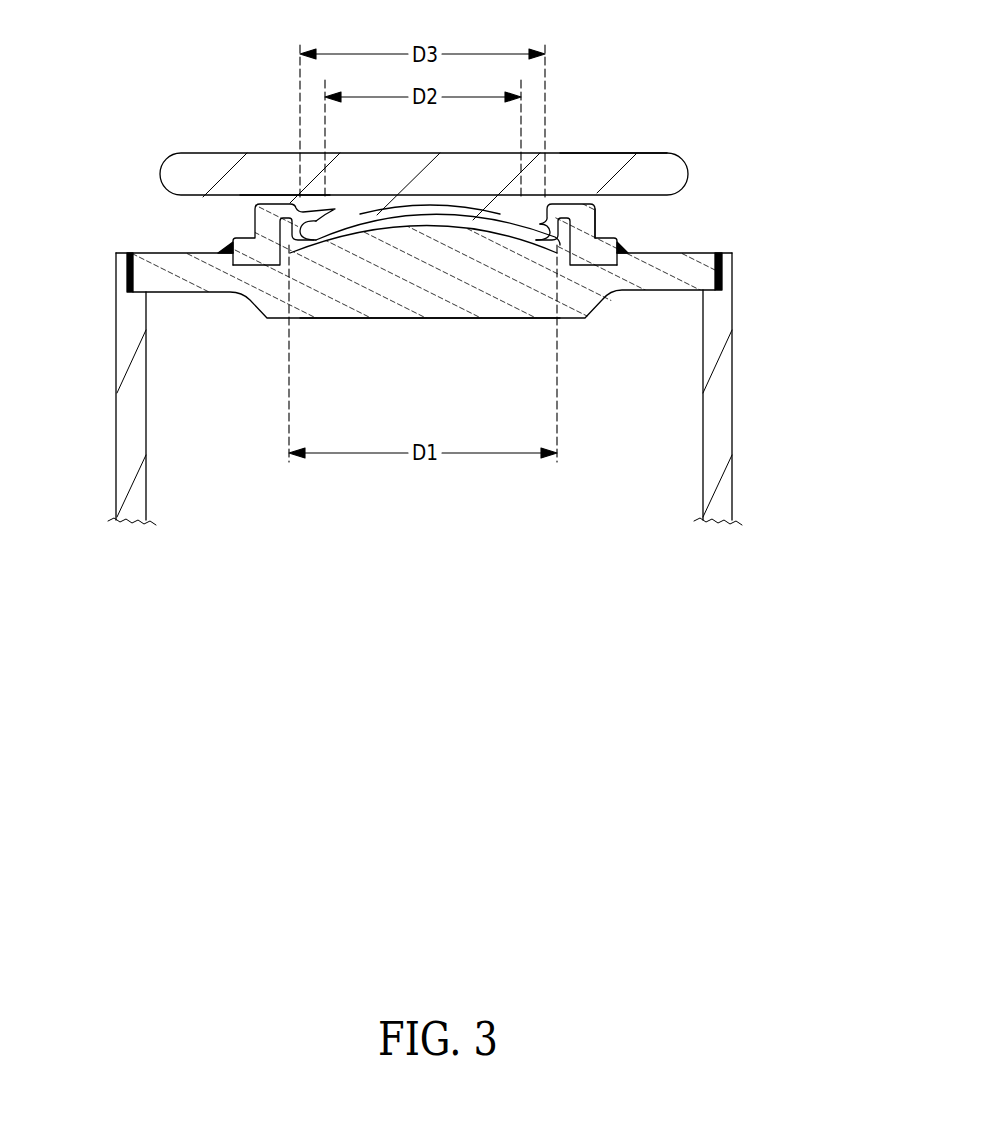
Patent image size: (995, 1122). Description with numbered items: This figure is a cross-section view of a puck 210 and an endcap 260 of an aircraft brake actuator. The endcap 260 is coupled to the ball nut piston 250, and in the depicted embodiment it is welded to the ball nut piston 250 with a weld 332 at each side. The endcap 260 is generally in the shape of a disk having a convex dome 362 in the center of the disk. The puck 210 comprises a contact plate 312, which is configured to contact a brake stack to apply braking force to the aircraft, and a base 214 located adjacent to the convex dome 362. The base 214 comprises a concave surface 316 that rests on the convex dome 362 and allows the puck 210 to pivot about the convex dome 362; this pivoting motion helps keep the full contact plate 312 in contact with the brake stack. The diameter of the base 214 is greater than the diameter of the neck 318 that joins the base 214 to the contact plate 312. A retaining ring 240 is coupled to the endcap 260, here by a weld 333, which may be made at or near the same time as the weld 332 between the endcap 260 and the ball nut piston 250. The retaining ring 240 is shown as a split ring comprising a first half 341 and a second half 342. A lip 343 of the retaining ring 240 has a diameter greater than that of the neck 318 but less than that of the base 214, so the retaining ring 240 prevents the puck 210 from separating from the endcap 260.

The puck 210 is at (690, 173).
The contact plate 312 is at (647, 150).
The neck 318 is at (306, 197).
The base 214 is at (594, 231).
The retaining ring 240 is at (610, 268).
The ball nut piston 250 is at (733, 367).
The endcap 260 is at (593, 297).
The concave surface 316 is at (485, 221).
The convex dome 362 is at (412, 230).
The weld 332 is at (116, 275).
The weld 333 is at (620, 245).
The first half 341 is at (253, 224).
The second half 342 is at (592, 210).
The lip 343 is at (318, 240).